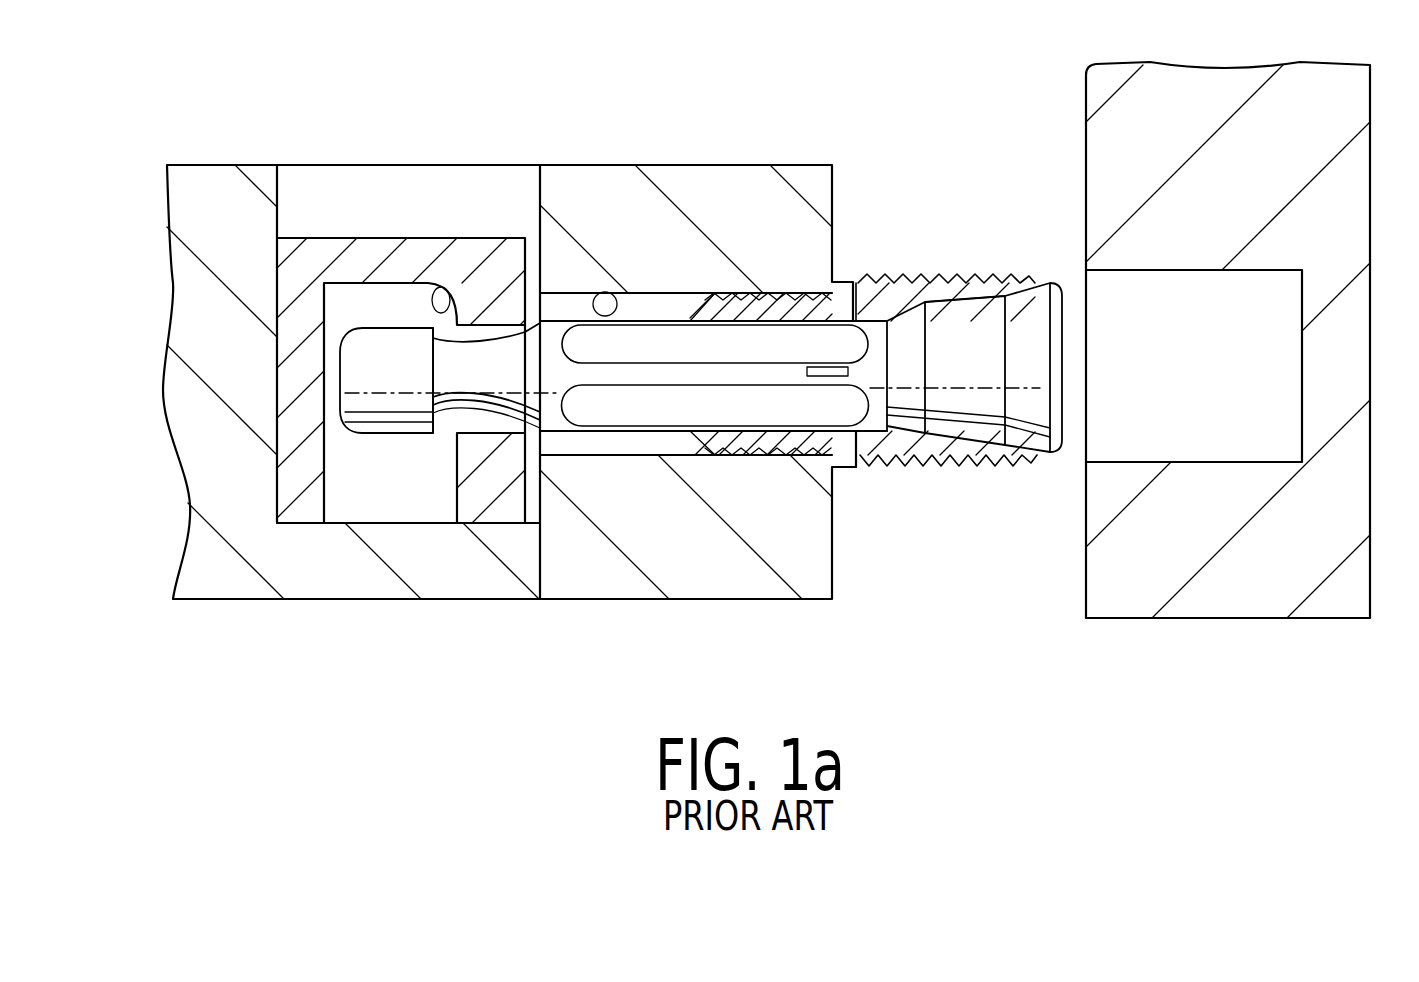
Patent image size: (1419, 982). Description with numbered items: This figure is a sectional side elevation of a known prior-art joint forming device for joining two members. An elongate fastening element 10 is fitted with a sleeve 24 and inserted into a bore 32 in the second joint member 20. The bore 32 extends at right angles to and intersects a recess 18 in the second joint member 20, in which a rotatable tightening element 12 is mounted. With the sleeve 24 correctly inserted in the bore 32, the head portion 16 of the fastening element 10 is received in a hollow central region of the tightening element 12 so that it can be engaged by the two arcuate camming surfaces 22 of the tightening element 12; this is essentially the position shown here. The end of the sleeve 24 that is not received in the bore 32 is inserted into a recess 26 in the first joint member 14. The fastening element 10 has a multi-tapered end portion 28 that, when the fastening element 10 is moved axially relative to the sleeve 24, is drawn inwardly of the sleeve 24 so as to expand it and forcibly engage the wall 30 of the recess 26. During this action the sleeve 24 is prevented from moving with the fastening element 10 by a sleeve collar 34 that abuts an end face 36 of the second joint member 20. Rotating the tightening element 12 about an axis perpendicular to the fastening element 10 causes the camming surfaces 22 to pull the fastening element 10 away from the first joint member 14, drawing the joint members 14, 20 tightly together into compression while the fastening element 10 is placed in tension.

The fastening element 10 is at (474, 392).
The tightening element 12 is at (398, 215).
The first joint member 14 is at (1322, 640).
The head portion 16 is at (360, 372).
The recess 18 is at (296, 200).
The second joint member 20 is at (688, 130).
The camming surfaces 22 is at (440, 285).
The sleeve 24 is at (866, 250).
The recess 26 is at (1105, 442).
The multi-tapered end portion 28 is at (1024, 305).
The wall 30 is at (1232, 462).
The bore 32 is at (594, 292).
The sleeve collar 34 is at (843, 470).
The end face 36 is at (843, 172).